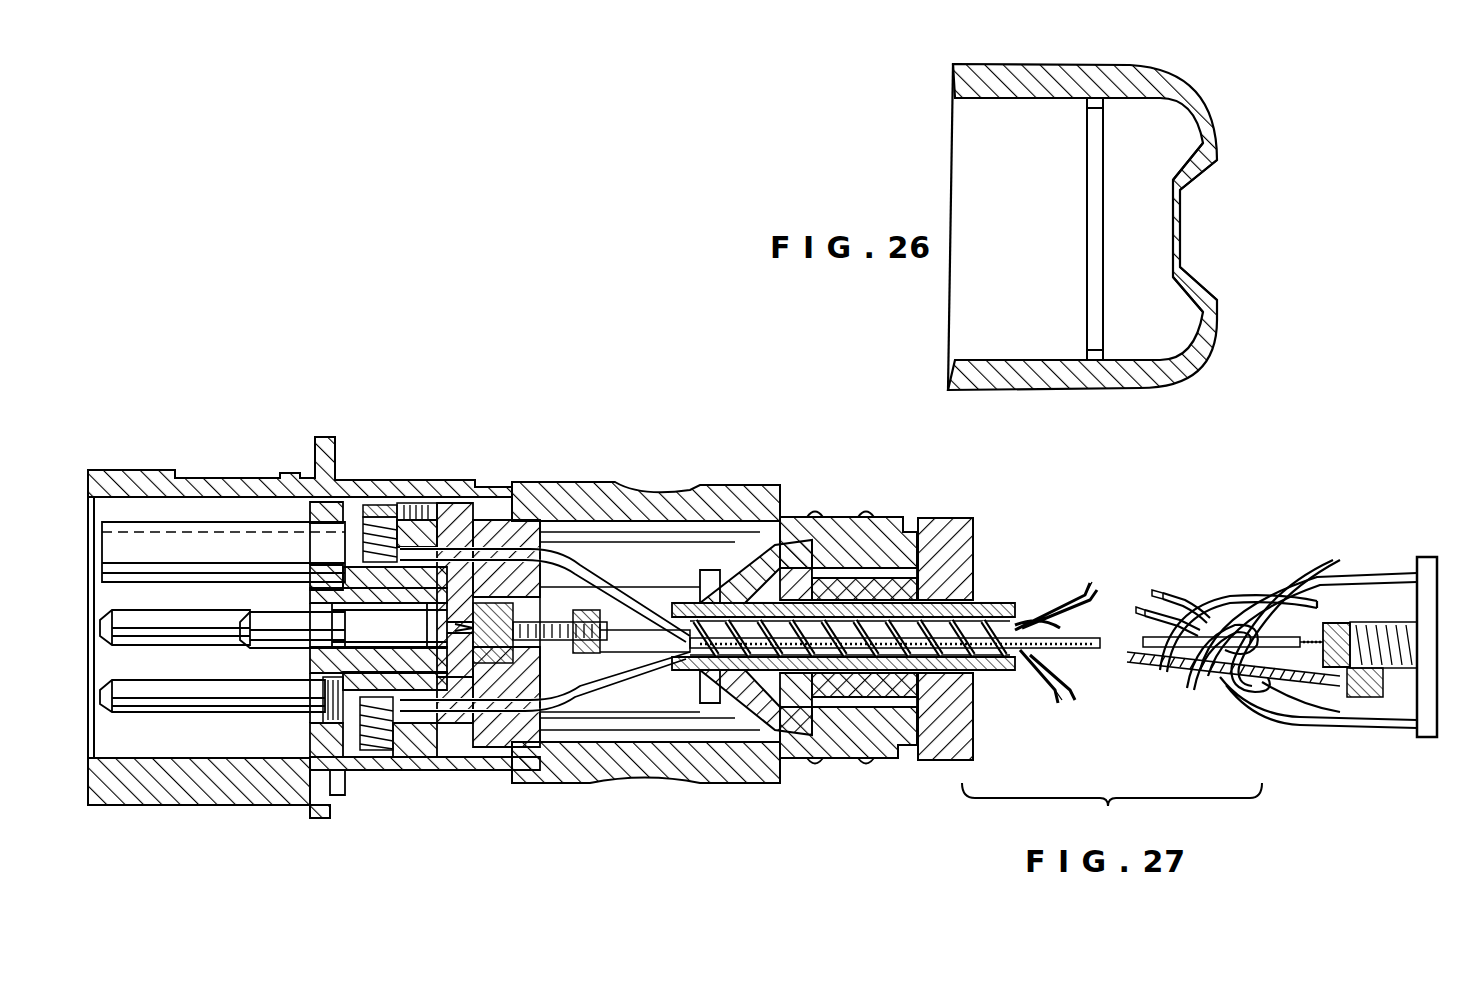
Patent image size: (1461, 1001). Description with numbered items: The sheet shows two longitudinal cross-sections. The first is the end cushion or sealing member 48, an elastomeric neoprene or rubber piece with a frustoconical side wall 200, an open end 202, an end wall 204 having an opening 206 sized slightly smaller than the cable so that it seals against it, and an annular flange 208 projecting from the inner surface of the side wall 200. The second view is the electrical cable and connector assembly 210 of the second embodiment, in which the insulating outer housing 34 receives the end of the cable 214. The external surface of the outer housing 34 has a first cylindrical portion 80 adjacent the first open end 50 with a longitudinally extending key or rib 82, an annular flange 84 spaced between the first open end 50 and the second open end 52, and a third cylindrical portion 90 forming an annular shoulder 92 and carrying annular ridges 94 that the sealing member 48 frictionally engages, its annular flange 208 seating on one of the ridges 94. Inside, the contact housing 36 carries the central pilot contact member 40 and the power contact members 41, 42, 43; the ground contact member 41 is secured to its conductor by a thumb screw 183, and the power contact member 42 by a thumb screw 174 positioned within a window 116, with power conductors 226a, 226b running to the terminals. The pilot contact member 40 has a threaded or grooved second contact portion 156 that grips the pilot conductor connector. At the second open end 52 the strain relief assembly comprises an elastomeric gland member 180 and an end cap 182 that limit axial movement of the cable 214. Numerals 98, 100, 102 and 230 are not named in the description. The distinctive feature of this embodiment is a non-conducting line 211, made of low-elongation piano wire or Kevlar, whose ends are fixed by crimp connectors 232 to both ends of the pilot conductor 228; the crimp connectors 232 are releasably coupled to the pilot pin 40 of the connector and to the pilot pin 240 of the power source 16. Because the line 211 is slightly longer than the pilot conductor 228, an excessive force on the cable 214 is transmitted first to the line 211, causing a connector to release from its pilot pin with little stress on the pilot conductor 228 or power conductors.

In FIG. 27, the power source 16 is at (1412, 557).
In FIG. 27, the insulating outer housing 34 is at (378, 626).
In FIG. 27, the contact housing 36 is at (305, 718).
In FIG. 27, the central pilot contact member 40 is at (288, 612).
In FIG. 27, the power contact member 41 is at (240, 522).
In FIG. 27, the power contact member 42 is at (152, 712).
In FIG. 27, the power contact member 43 is at (148, 610).
In FIG. 26, the end cushion or sealing member 48 is at (1165, 66).
In FIG. 27, the first open end 50 is at (289, 644).
In FIG. 27, the second open end 52 is at (912, 515).
In FIG. 27, the first substantially cylindrical portion 80 is at (198, 478).
In FIG. 27, the longitudinally extending key or rib 82 is at (190, 805).
In FIG. 27, the annular flange 84 is at (318, 818).
In FIG. 27, the third substantially cylindrical portion 90 is at (811, 603).
In FIG. 27, the annular shoulder 92 is at (790, 517).
In FIG. 27, the annular ridges 94 is at (866, 512).
In FIG. 27, the connector body 98 is at (650, 490).
In FIG. 27, the body lip 100 is at (340, 795).
In FIG. 27, the body flange 102 is at (448, 770).
In FIG. 27, the window 116 is at (412, 503).
In FIG. 27, the second cylindrical contact portion 156 is at (448, 630).
In FIG. 27, the thumb screw 174 is at (392, 757).
In FIG. 27, the elastomeric gland or grommet member 180 is at (740, 758).
In FIG. 27, the end cap 182 is at (960, 518).
In FIG. 27, the thumb screw 183 is at (372, 505).
In FIG. 26, the frustoconical side wall 200 is at (1017, 66).
In FIG. 26, the open end 202 is at (950, 148).
In FIG. 26, the end wall 204 is at (1218, 180).
In FIG. 26, the opening 206 is at (1178, 262).
In FIG. 26, the annular flange 208 is at (1093, 108).
In FIG. 27, the electrical cable and connector assembly 210 is at (470, 380).
In FIG. 27, the non-conducting line or wire 211 is at (1270, 690).
In FIG. 27, the cable 214 is at (998, 603).
In FIG. 27, the power conductor 226a is at (583, 580).
In FIG. 27, the power conductor 226b is at (580, 712).
In FIG. 27, the pilot conductor 228 is at (1032, 625).
In FIG. 27, the center conductor 230 is at (1005, 672).
In FIG. 27, the crimp connectors 232 is at (585, 660).
In FIG. 27, the pilot pin 240 is at (1398, 690).